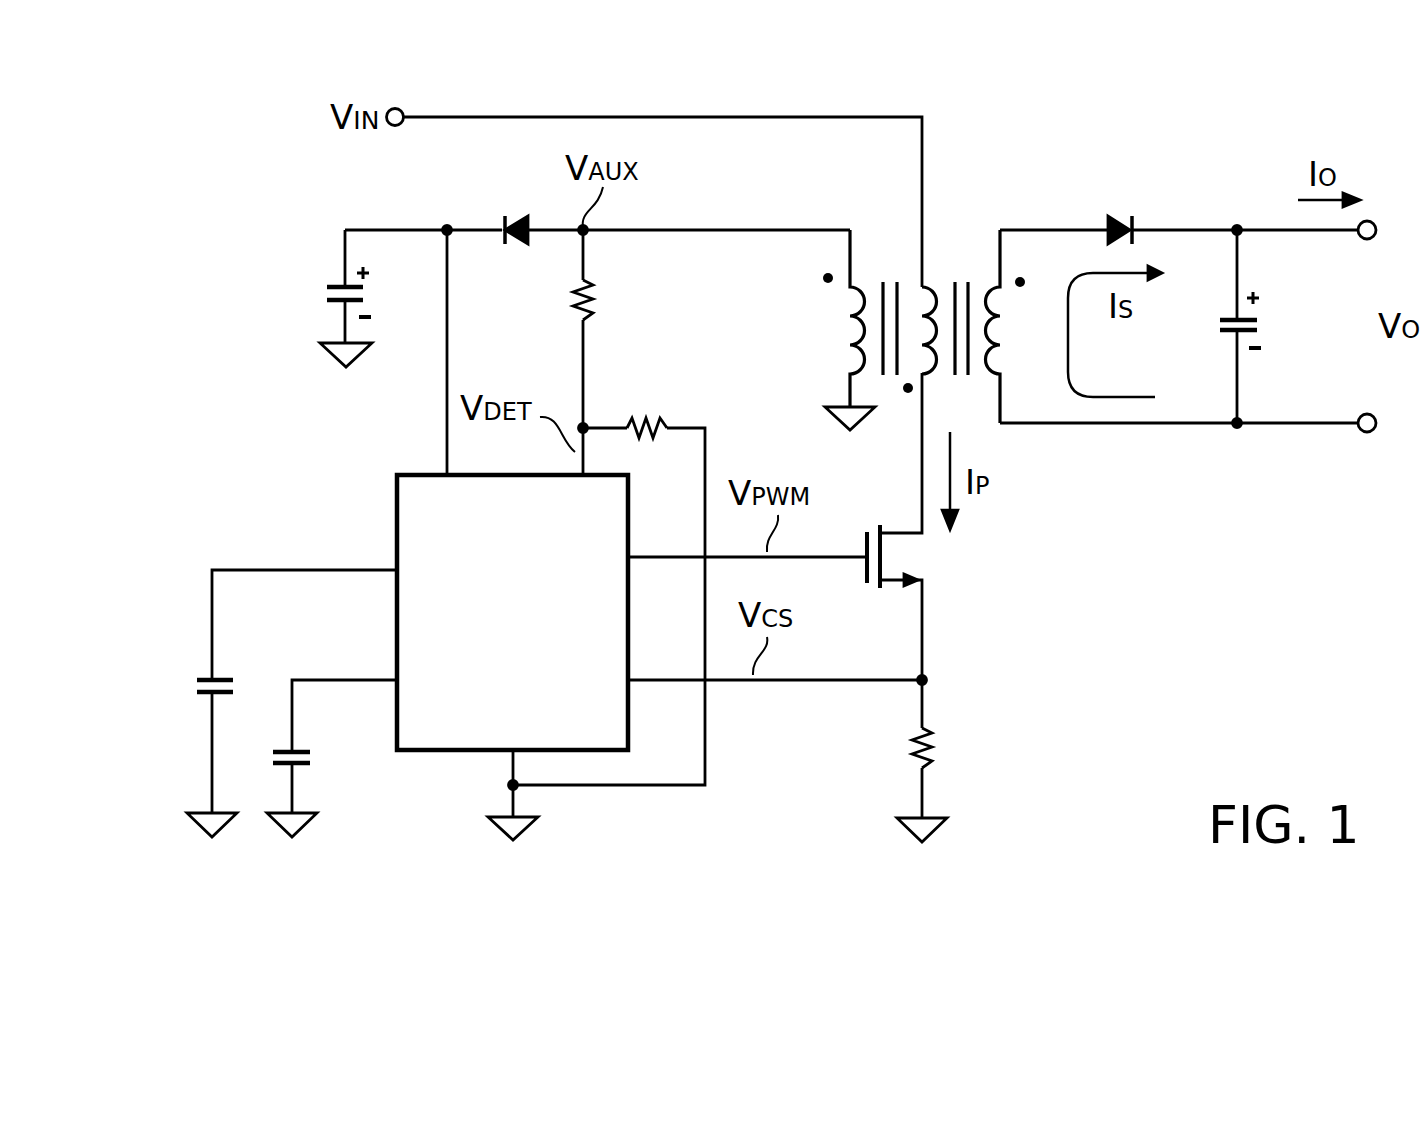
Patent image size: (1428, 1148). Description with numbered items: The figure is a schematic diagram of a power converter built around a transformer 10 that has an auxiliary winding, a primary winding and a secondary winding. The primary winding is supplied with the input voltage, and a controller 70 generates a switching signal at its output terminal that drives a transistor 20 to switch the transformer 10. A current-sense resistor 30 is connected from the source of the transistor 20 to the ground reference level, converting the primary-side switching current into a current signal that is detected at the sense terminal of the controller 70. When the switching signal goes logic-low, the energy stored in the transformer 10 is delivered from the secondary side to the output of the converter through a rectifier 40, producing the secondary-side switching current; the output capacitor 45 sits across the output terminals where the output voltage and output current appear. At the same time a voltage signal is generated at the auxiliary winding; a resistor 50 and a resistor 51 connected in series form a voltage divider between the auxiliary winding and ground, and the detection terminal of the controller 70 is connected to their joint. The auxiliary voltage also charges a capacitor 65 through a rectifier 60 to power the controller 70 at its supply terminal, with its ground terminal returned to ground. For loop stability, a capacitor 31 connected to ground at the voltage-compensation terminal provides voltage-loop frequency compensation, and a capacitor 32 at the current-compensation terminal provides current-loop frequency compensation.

The transformer 10 is at (945, 243).
The transistor 20 is at (923, 563).
The current-sense resistor 30 is at (903, 748).
The capacitor 31 is at (188, 685).
The capacitor 32 is at (313, 760).
The rectifier 40 is at (1120, 210).
The output capacitor 45 is at (1265, 323).
The resistor 50 is at (607, 298).
The resistor 51 is at (647, 410).
The rectifier 60 is at (517, 257).
The capacitor 65 is at (318, 293).
The controller 70 is at (393, 515).